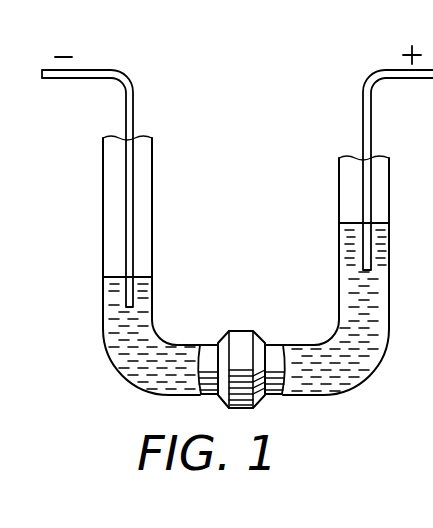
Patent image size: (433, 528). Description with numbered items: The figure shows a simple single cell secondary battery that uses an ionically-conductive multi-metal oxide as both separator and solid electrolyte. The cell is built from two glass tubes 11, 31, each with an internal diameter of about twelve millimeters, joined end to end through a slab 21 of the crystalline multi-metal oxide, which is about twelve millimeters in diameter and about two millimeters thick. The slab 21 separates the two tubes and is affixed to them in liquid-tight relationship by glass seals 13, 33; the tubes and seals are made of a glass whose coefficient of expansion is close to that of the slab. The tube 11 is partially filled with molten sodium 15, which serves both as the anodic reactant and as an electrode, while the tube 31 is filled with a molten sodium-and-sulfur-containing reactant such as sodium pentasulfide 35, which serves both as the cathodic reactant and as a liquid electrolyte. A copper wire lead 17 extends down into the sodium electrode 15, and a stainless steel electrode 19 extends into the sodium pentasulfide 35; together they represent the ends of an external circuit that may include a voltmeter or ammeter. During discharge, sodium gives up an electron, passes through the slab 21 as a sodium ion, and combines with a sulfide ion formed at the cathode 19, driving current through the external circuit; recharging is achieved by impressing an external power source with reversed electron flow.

The glass tube 11 is at (152, 160).
The glass seal 13 is at (208, 350).
The molten sodium 15 is at (117, 348).
The copper wire lead 17 is at (101, 70).
The stainless steel electrode 19 is at (378, 70).
The slab 21 is at (240, 340).
The glass tube 31 is at (390, 168).
The glass seal 33 is at (273, 352).
The sodium pentasulfide 35 is at (347, 367).